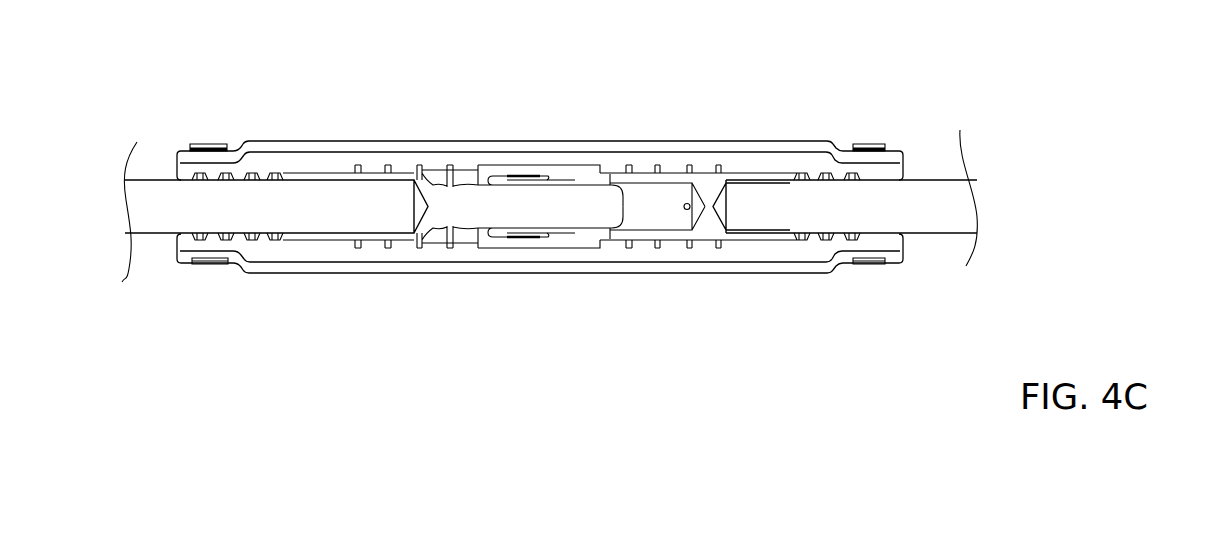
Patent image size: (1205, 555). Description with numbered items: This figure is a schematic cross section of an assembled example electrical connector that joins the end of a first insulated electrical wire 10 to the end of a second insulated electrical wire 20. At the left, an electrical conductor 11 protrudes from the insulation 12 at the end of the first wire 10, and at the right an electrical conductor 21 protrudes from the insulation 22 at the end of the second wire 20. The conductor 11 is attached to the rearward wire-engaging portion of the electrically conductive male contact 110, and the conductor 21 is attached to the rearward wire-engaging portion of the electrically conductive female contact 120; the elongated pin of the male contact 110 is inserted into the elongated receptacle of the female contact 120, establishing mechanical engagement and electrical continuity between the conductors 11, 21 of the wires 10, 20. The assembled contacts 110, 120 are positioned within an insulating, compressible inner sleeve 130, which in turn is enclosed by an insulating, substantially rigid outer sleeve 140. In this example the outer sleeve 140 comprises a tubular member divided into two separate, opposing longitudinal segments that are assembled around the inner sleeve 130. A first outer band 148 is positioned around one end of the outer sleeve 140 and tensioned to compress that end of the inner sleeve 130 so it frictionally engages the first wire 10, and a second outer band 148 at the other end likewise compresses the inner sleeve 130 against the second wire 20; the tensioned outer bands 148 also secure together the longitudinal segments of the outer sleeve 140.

The first insulated electrical wire 10 is at (275, 203).
The electrical conductor 11 is at (318, 207).
The insulation 12 is at (163, 180).
The second insulated electrical wire 20 is at (845, 202).
The electrical conductor 21 is at (775, 207).
The insulation 22 is at (930, 180).
The male contact 110 is at (551, 203).
The female contact 120 is at (645, 233).
The inner sleeve 130 is at (432, 163).
The outer sleeve 140 is at (727, 148).
The outer band 148 is at (210, 144).